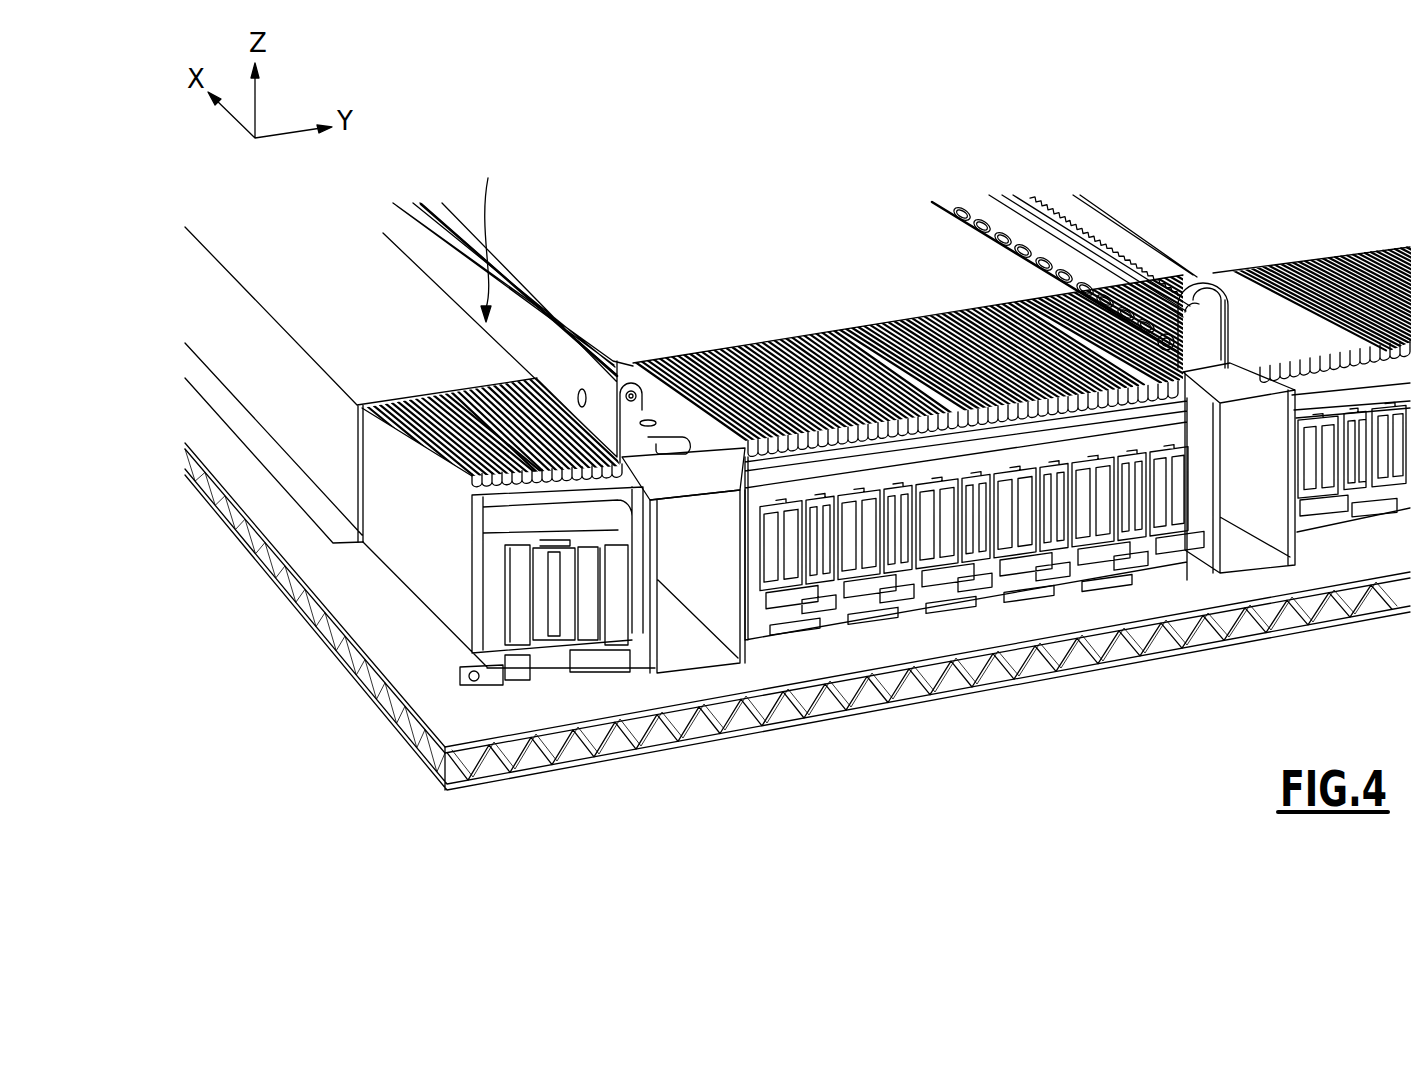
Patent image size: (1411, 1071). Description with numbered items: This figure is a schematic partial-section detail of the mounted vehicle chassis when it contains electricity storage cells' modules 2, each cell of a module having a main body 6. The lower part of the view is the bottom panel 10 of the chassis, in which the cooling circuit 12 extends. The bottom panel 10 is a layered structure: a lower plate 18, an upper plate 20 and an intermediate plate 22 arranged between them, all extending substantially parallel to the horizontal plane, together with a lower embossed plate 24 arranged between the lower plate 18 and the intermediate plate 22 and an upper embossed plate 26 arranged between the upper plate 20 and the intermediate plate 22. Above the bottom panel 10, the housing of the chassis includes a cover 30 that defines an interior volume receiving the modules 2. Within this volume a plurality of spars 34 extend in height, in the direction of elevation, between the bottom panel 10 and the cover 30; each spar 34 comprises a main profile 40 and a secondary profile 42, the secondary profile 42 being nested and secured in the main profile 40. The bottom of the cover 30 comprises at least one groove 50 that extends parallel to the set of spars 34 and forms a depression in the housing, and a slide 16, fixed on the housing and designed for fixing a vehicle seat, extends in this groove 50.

The electricity storage cells' module 2 is at (420, 520).
The main body 6 is at (197, 552).
The bottom panel 10 is at (236, 622).
The cooling circuit 12 is at (870, 700).
The slide 16 is at (543, 302).
The lower plate 18 is at (438, 707).
The upper plate 20 is at (383, 707).
The intermediate plate 22 is at (477, 777).
The lower embossed plate 24 is at (550, 773).
The upper embossed plate 26 is at (420, 757).
The cover 30 is at (347, 325).
The spar 34 is at (651, 700).
The main profile 40 is at (686, 648).
The secondary profile 42 is at (690, 483).
The groove 50 is at (487, 232).